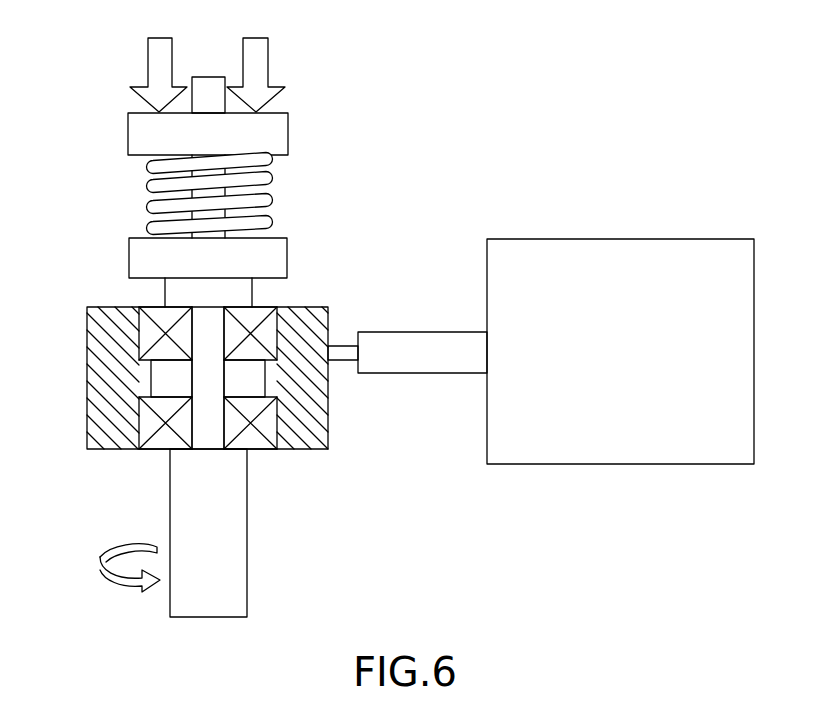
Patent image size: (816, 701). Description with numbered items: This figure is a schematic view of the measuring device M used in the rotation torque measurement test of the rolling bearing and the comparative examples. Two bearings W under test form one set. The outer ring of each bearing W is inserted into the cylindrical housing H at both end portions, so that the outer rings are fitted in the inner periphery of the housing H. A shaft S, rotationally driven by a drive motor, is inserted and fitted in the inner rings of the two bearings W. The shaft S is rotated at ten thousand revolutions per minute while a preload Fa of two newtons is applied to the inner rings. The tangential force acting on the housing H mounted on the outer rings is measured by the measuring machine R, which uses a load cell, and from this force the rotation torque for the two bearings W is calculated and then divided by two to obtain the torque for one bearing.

The measuring device M is at (440, 167).
The preload Fa is at (215, 75).
The housing H is at (102, 370).
The bearings W is at (150, 307).
The shaft S is at (233, 530).
The measuring machine R is at (618, 260).